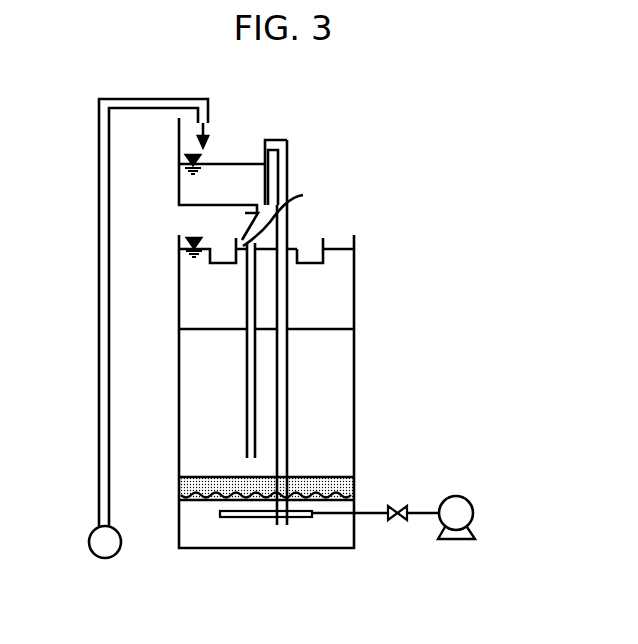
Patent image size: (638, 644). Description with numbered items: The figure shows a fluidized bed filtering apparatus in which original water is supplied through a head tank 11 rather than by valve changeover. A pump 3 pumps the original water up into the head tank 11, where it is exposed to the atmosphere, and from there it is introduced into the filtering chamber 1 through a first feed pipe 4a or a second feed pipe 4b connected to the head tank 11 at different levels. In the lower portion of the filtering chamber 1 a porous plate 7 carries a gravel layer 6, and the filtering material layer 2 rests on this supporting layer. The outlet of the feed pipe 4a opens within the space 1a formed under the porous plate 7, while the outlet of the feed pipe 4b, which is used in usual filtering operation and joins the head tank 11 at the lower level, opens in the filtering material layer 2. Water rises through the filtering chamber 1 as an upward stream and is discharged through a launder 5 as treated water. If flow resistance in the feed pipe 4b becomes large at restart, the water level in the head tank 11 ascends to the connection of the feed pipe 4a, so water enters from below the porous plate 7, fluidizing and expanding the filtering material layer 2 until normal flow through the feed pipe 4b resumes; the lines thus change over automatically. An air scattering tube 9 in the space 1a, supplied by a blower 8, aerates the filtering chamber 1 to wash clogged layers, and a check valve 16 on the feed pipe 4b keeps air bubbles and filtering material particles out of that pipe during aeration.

The filtering chamber 1 is at (355, 295).
The space 1a is at (332, 537).
The filtering material layer 2 is at (345, 378).
The pump 3 is at (89, 541).
The first feed pipe 4a is at (288, 163).
The second feed pipe 4b is at (247, 313).
The launder 5 is at (323, 245).
The gravel layer 6 is at (355, 484).
The porous plate 7 is at (356, 500).
The blower 8 is at (474, 513).
The air scattering tube 9 is at (261, 520).
The head tank 11 is at (272, 129).
The check valve 16 is at (291, 210).